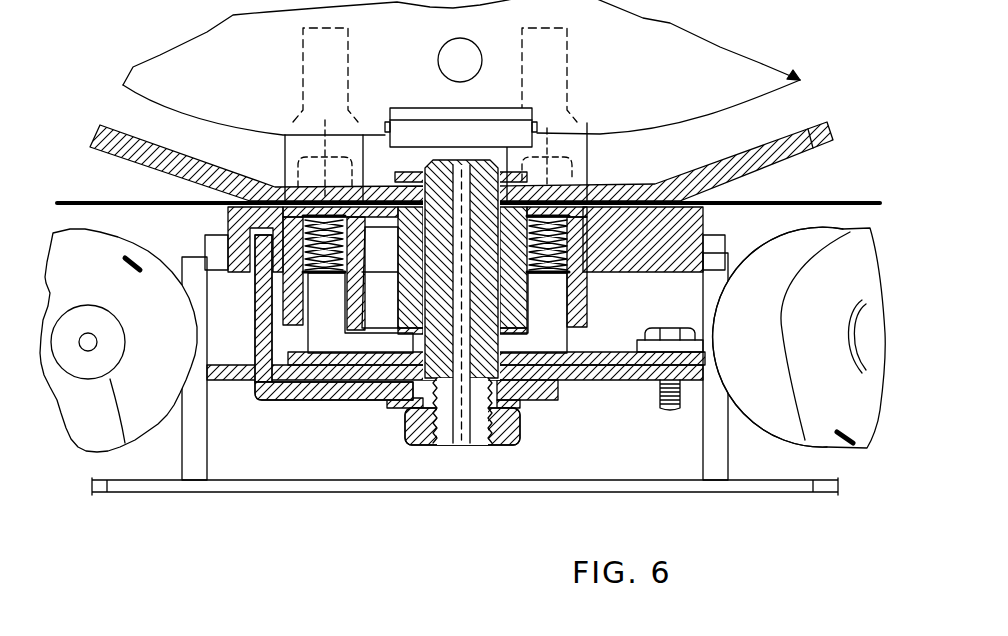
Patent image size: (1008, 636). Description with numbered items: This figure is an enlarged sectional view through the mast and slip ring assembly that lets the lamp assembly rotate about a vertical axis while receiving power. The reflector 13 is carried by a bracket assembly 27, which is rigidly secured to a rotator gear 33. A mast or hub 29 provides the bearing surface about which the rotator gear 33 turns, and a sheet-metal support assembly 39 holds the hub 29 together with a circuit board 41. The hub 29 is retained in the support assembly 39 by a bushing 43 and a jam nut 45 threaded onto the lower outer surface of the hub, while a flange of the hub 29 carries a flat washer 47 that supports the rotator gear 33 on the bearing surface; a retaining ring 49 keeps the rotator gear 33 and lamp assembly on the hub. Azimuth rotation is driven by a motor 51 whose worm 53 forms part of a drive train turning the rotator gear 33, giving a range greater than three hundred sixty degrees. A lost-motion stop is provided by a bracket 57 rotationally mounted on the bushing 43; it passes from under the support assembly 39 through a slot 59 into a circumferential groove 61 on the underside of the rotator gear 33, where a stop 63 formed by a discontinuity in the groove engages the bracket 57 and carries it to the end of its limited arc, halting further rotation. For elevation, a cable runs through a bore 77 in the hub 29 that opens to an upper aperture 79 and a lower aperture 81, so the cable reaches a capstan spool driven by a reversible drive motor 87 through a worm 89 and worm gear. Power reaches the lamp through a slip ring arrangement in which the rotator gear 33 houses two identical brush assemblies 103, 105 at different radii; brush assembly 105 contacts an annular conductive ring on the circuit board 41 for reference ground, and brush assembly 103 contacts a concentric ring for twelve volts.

The reflector 13 is at (653, 32).
The bracket assembly 27 is at (790, 133).
The hub 29 is at (527, 343).
The rotator gear 33 is at (693, 210).
The support assembly 39 is at (607, 478).
The circuit board 41 is at (322, 388).
The bushing 43 is at (400, 408).
The jam nut 45 is at (405, 440).
The flat washer 47 is at (560, 392).
The retaining ring 49 is at (408, 170).
The motor 51 is at (143, 433).
The worm 53 is at (125, 443).
The bracket 57 is at (255, 322).
The slot 59 is at (252, 386).
The circumferential groove 61 is at (250, 275).
The stop 63 is at (653, 252).
The bore 77 is at (470, 447).
The upper aperture 79 is at (462, 168).
The lower aperture 81 is at (462, 445).
The drive motor 87 is at (773, 427).
The worm 89 is at (863, 412).
The brush assembly 103 is at (330, 297).
The brush assembly 105 is at (548, 285).